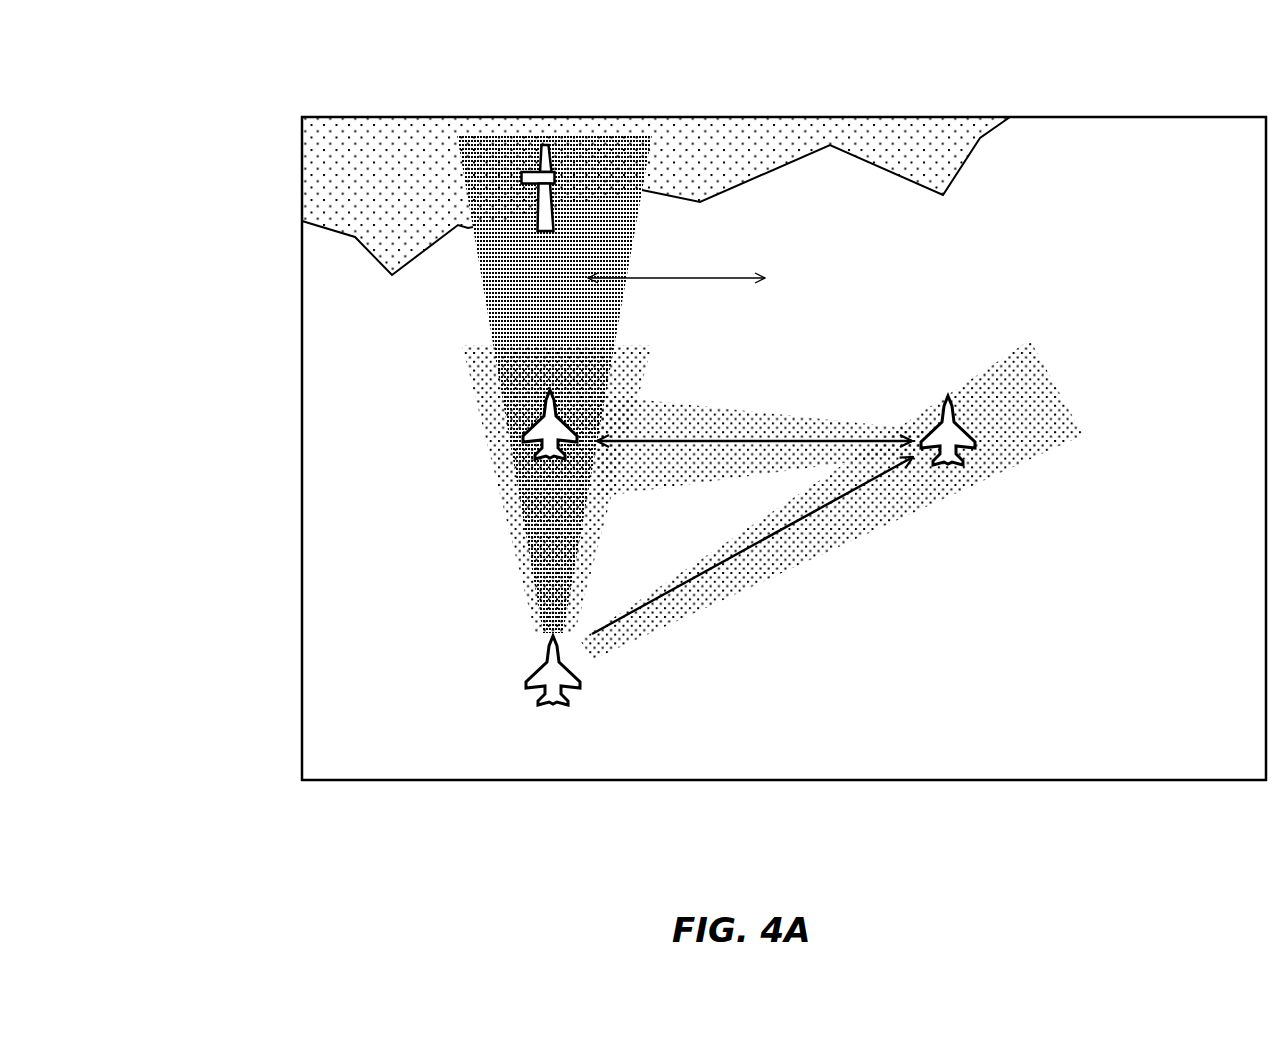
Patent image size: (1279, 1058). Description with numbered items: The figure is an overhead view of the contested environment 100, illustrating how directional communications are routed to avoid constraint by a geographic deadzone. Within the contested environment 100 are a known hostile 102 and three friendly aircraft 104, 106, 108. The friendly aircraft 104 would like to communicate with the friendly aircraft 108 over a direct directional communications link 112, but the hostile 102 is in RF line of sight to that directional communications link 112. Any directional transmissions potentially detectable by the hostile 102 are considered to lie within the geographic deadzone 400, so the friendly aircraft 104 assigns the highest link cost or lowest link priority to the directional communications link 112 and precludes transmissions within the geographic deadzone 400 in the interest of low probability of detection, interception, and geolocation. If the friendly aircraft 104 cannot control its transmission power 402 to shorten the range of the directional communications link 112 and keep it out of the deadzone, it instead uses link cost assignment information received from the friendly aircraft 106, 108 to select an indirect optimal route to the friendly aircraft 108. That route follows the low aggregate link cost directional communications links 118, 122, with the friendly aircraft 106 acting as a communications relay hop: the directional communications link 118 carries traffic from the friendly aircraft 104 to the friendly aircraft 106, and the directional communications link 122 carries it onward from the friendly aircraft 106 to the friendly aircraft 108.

The contested environment 100 is at (218, 80).
The hostile 102 is at (538, 236).
The friendly aircraft 104 is at (537, 680).
The friendly aircraft 106 is at (963, 458).
The friendly aircraft 108 is at (537, 423).
The directional communications link 112 is at (545, 553).
The directional communications link 118 is at (812, 518).
The directional communications link 122 is at (805, 434).
The geographic deadzone 400 is at (592, 281).
The transmission power control 402 is at (482, 414).